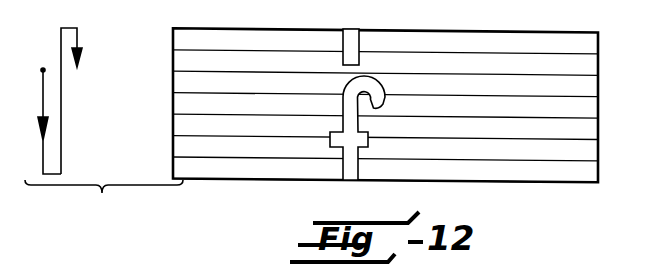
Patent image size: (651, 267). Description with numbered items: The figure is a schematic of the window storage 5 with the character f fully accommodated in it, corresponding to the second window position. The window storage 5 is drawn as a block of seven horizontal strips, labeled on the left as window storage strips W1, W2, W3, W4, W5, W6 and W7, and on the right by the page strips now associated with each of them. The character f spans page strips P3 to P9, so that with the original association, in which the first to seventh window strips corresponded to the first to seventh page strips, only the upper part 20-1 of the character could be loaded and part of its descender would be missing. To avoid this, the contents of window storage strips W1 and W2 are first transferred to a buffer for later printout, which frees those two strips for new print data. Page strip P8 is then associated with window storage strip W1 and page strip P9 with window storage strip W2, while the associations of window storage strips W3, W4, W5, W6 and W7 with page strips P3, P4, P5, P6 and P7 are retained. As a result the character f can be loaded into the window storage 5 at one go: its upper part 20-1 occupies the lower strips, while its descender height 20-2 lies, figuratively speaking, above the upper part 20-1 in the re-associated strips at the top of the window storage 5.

The window storage 5 is at (385, 115).
The upper part of character f 20-1 is at (350, 169).
The descender height of character f 20-2 is at (356, 14).
The window storage strip W1 is at (253, 39).
The window storage strip W2 is at (253, 61).
The window storage strip W3 is at (253, 83).
The window storage strip W4 is at (253, 104).
The window storage strip W5 is at (253, 125).
The window storage strip W6 is at (253, 146).
The window storage strip W7 is at (253, 167).
The page strip P8 is at (516, 43).
The page strip P9 is at (516, 64).
The page strip P3 is at (516, 86).
The page strip P4 is at (516, 107).
The page strip P5 is at (516, 129).
The page strip P6 is at (516, 150).
The page strip P7 is at (510, 192).